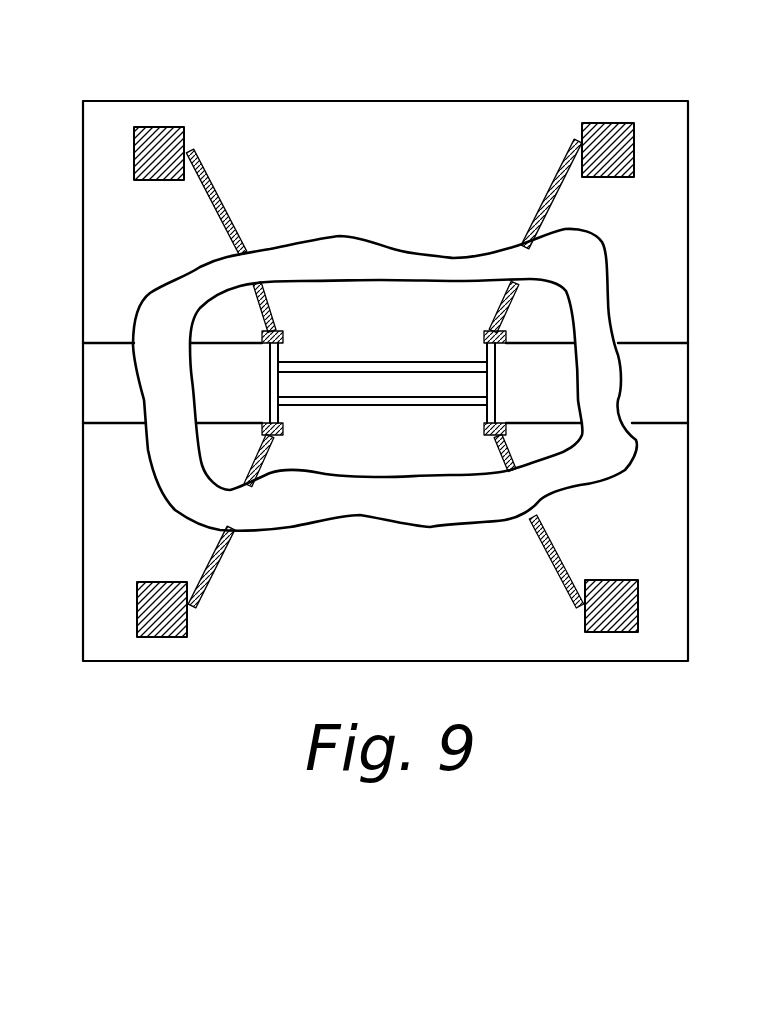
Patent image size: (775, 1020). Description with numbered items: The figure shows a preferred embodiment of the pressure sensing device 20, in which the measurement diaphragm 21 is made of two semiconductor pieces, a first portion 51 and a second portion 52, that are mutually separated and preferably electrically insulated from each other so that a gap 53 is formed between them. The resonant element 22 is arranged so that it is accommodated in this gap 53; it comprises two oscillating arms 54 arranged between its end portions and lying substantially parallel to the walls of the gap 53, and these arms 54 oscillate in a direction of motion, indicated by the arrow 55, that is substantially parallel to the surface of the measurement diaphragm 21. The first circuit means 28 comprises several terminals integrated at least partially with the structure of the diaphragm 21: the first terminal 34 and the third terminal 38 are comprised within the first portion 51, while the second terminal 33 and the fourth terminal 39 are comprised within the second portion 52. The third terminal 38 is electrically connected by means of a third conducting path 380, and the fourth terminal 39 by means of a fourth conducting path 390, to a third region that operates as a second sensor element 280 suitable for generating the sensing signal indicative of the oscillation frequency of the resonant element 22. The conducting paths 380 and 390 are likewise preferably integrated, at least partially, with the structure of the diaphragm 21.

The pressure sensing device 20 is at (395, 92).
The measurement diaphragm 21 is at (528, 145).
The resonant element 22 is at (425, 407).
The first circuit means 28 is at (258, 333).
The second terminal 33 is at (200, 623).
The first terminal 34 is at (137, 174).
The third terminal 38 is at (641, 150).
The fourth terminal 39 is at (645, 606).
The first portion 51 is at (402, 181).
The second portion 52 is at (404, 471).
The gap 53 is at (130, 405).
The oscillating arms 54 is at (312, 392).
The arrow 55 is at (460, 405).
The second sensor element 280 is at (483, 320).
The third conducting path 380 is at (498, 297).
The fourth conducting path 390 is at (504, 462).